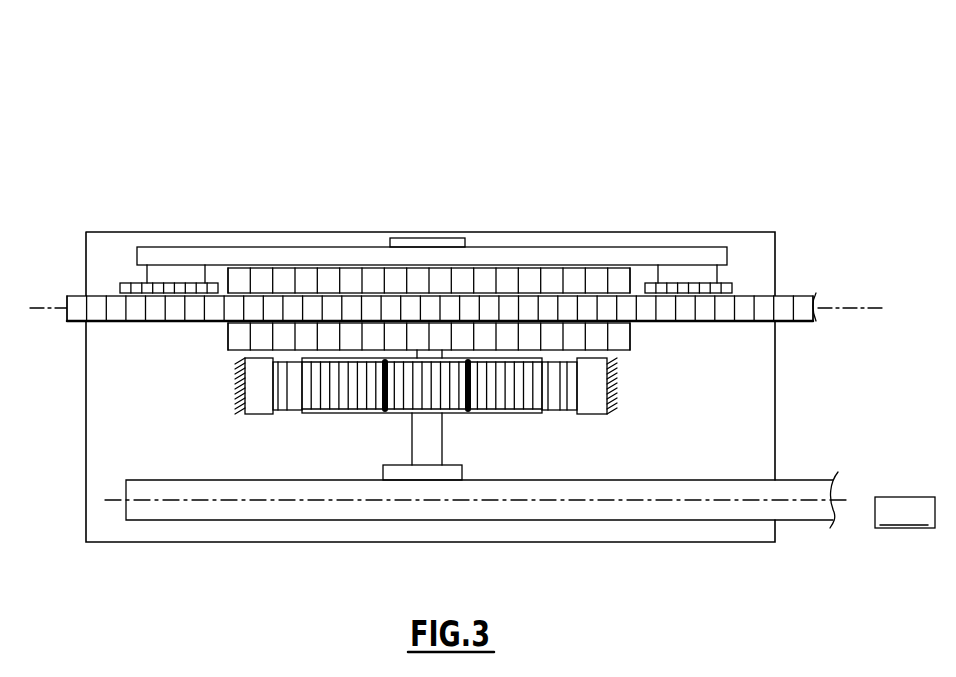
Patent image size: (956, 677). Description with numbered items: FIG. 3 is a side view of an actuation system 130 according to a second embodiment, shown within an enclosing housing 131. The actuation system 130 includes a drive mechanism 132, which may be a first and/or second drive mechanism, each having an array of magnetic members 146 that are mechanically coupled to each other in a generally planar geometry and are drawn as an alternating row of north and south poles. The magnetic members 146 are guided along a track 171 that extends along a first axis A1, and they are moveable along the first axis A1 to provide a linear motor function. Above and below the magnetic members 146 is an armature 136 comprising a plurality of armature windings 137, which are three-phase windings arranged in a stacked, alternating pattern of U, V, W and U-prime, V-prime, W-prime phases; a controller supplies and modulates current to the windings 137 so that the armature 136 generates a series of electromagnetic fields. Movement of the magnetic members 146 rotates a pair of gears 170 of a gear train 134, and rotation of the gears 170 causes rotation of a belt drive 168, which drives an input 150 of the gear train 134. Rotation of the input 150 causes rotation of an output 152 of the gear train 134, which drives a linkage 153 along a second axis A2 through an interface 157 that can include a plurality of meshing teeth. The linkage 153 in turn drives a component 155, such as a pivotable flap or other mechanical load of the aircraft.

The actuation system 130 is at (134, 136).
The housing 131 is at (214, 167).
The drive mechanism 132 is at (112, 250).
The armature 136 is at (352, 268).
The armature windings 137 is at (619, 268).
The input 150 is at (440, 238).
The belt drive 168 is at (530, 247).
The gears 170 is at (730, 283).
The track 171 is at (784, 297).
The magnetic members 146 is at (112, 323).
The gear train 134 is at (211, 393).
The output 152 is at (451, 465).
The linkage 153 is at (682, 485).
The component 155 is at (875, 512).
The interface 157 is at (395, 486).
The first axis A1 is at (848, 308).
The second axis A2 is at (848, 500).